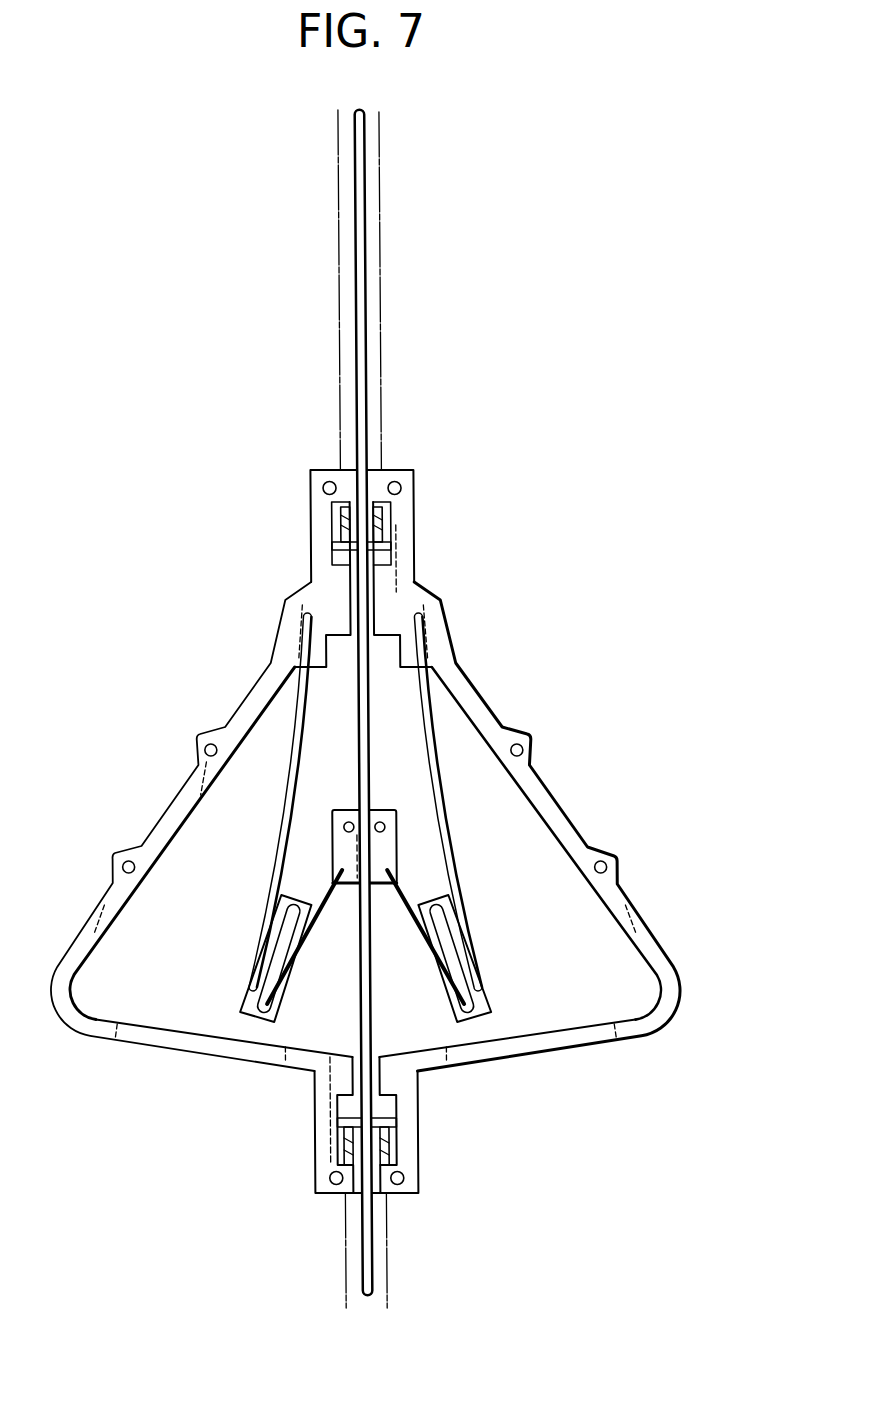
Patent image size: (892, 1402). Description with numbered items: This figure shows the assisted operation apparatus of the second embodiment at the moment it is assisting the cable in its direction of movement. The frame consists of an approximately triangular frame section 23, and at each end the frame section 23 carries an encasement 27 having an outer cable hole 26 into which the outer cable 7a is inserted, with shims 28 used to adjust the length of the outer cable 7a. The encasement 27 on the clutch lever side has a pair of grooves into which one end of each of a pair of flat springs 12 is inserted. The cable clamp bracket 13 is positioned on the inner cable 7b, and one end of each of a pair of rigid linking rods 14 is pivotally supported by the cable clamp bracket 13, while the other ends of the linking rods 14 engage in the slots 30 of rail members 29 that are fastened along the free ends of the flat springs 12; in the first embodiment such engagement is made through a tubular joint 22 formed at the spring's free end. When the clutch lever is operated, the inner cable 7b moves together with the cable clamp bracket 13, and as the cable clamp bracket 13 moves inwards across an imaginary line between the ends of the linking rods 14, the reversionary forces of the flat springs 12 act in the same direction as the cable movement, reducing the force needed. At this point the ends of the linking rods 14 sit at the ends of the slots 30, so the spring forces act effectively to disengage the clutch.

The outer cable 7a is at (384, 293).
The inner cable 7b is at (367, 705).
The flat springs 12 is at (286, 797).
The cable clamp bracket 13 is at (386, 847).
The linking rods 14 is at (318, 914).
The tubular joint 22 is at (316, 593).
The frame section 23 is at (168, 820).
The outer cable hole 26 is at (381, 520).
The encasement 27 is at (319, 1137).
The shims 28 is at (392, 545).
The rail members 29 is at (275, 906).
The slot 30 is at (283, 942).